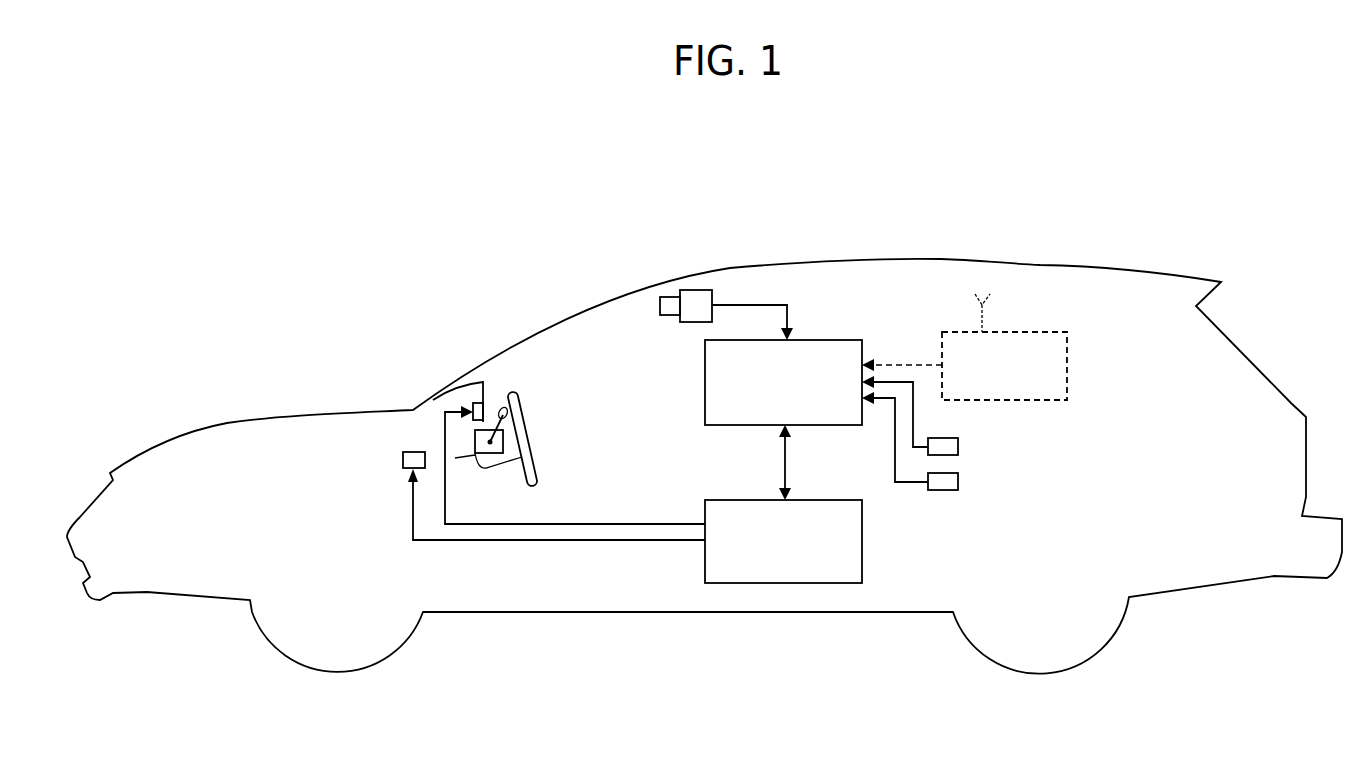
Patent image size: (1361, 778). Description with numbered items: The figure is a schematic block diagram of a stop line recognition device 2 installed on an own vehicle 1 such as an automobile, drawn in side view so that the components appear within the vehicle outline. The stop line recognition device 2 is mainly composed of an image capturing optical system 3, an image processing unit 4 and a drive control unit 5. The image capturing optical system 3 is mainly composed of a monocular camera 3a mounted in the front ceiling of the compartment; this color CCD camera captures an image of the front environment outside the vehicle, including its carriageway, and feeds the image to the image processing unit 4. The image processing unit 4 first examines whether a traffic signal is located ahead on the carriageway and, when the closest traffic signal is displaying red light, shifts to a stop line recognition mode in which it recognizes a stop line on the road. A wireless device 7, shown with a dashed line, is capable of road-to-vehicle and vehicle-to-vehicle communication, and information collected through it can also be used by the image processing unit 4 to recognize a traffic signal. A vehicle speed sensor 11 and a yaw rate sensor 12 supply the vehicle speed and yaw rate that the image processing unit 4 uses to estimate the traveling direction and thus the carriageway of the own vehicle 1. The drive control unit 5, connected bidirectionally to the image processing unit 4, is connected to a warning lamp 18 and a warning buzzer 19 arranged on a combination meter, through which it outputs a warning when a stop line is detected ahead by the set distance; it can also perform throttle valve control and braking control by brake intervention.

The own vehicle 1 is at (1062, 228).
The stop line recognition device 2 is at (1094, 350).
The image capturing optical system 3 is at (665, 340).
The monocular camera 3a is at (693, 290).
The image processing unit 4 is at (818, 340).
The drive control unit 5 is at (823, 500).
The wireless device 7 is at (1000, 332).
The vehicle speed sensor 11 is at (958, 443).
The yaw rate sensor 12 is at (958, 478).
The warning lamp 18 is at (483, 403).
The warning buzzer 19 is at (409, 452).